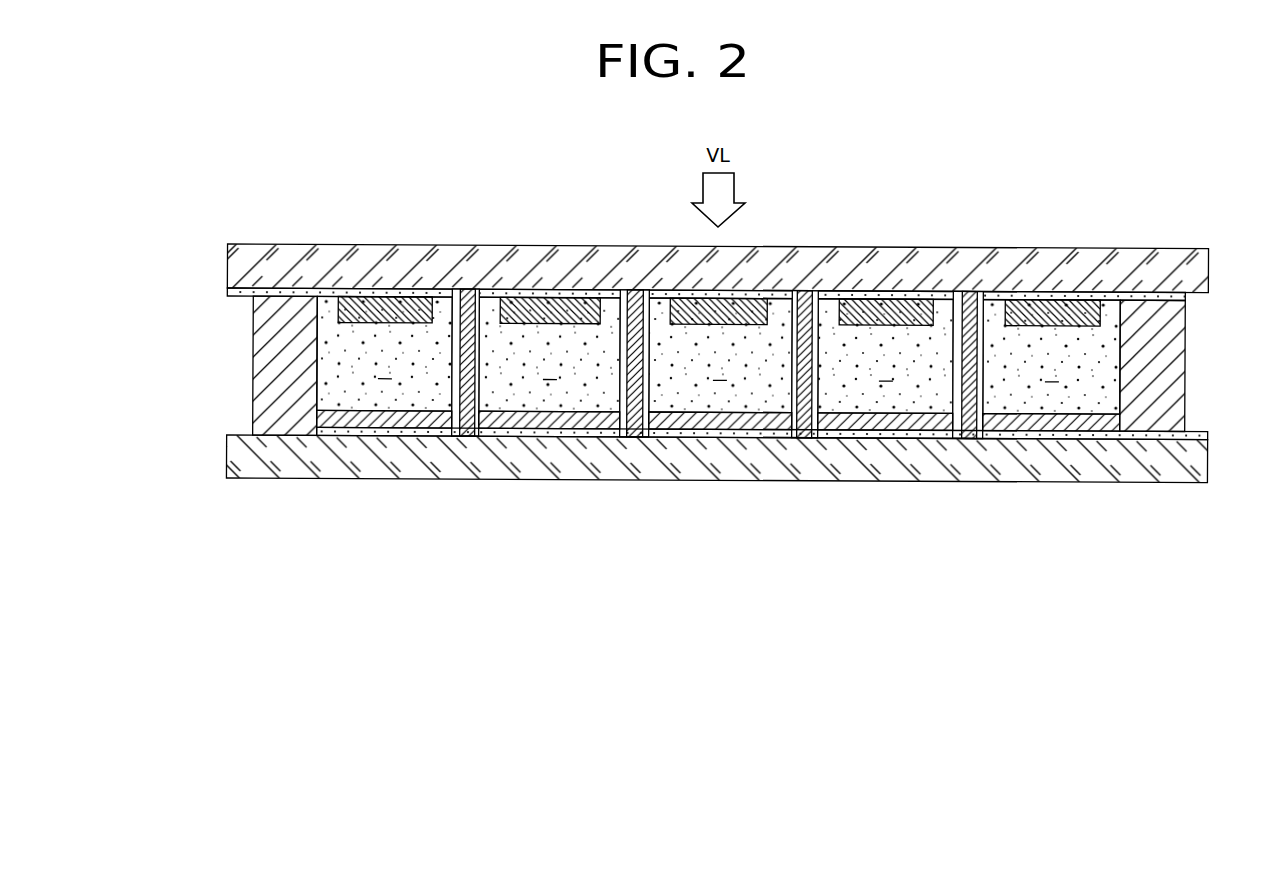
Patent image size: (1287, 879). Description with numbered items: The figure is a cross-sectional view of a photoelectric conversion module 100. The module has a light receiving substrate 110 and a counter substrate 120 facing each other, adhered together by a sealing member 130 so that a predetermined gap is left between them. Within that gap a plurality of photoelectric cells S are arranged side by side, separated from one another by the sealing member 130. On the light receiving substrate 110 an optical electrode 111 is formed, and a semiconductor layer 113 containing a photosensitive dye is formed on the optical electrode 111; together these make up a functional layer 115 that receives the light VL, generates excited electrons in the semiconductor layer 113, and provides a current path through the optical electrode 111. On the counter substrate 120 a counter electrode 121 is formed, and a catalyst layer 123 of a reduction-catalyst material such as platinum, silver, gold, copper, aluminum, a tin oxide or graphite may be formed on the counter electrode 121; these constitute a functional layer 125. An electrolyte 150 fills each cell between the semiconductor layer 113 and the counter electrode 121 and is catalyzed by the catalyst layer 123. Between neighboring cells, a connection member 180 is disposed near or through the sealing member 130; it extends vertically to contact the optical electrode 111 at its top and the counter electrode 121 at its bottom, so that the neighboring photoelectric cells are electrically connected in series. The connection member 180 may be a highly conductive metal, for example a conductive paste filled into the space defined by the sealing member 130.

The photoelectric conversion module 100 is at (1133, 233).
The light receiving substrate 110 is at (1198, 272).
The optical electrode 111 is at (227, 292).
The semiconductor layer 113 is at (338, 308).
The functional layer 115 is at (128, 288).
The counter substrate 120 is at (1198, 466).
The counter electrode 121 is at (342, 433).
The catalyst layer 123 is at (339, 424).
The functional layer 125 is at (363, 551).
The sealing member 130 is at (1168, 352).
The electrolyte 150 is at (323, 372).
The connection member 180 is at (468, 437).